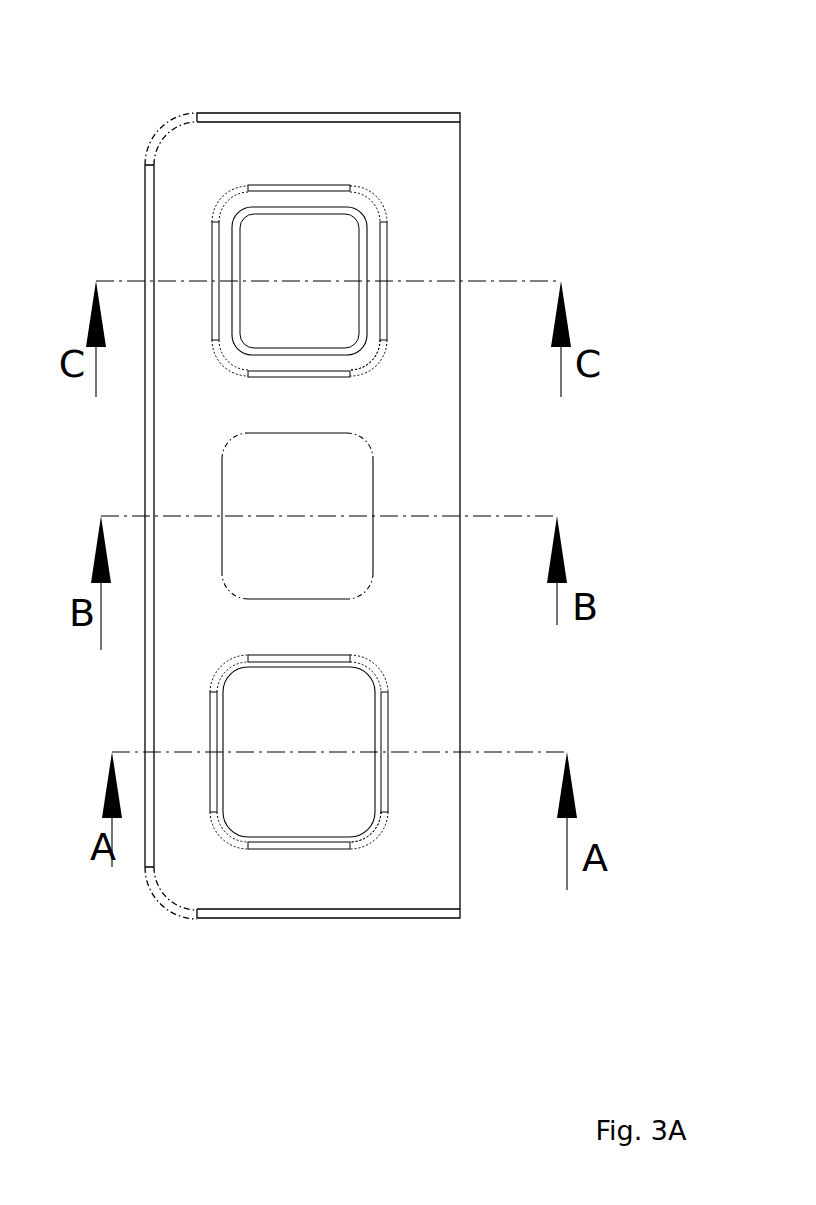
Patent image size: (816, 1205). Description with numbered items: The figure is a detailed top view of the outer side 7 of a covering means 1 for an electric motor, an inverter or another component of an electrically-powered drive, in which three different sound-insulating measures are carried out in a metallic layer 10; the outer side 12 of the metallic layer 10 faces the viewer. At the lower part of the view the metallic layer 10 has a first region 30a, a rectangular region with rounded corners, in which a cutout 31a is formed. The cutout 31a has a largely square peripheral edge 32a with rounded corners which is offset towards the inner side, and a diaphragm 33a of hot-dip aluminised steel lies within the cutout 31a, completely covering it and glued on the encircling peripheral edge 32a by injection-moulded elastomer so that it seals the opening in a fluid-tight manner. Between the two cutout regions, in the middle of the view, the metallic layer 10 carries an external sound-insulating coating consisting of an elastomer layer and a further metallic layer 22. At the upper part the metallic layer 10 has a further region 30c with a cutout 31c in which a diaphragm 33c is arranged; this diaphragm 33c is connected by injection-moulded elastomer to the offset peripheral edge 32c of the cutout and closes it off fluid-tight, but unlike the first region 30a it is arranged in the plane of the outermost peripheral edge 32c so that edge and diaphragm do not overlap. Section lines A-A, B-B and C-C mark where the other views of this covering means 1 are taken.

The covering means 1 is at (172, 176).
The metallic layer 10 is at (412, 138).
The outer side 7 is at (196, 337).
The outer side 12 is at (212, 868).
The further metallic layer 22 is at (322, 484).
The first region 30a is at (345, 712).
The further region 30c is at (322, 242).
The cutout 31a is at (268, 808).
The cutout 31c is at (277, 330).
The peripheral edge 32a is at (375, 825).
The peripheral edge 32c is at (378, 357).
The diaphragm 33a is at (261, 728).
The diaphragm 33c is at (316, 249).